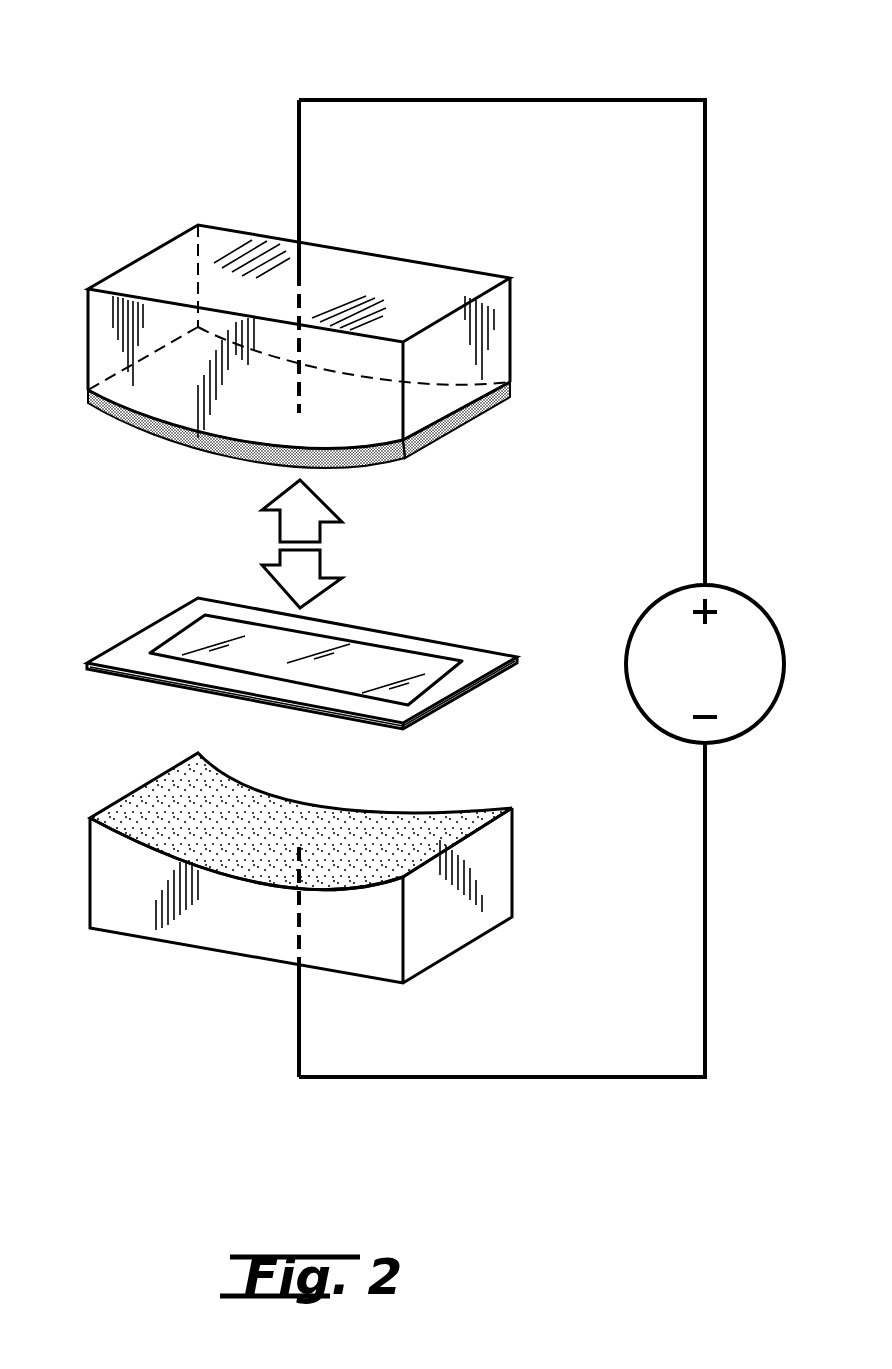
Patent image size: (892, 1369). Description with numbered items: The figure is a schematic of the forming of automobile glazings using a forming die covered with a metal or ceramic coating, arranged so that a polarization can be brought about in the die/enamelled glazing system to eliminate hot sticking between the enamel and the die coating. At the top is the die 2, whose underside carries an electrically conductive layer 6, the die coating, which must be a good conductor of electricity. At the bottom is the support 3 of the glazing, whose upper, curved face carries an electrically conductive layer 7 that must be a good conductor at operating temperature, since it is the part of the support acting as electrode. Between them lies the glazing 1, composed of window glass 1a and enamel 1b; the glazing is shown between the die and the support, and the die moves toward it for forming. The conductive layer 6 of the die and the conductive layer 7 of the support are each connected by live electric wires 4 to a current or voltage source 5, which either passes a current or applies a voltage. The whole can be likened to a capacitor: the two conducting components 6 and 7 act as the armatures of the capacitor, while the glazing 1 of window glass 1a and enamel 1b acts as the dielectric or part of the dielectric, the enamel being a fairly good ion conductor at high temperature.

The glazing 1 is at (293, 619).
The window glass 1a is at (378, 662).
The enamel 1b is at (490, 663).
The die 2 is at (167, 268).
The support 3 is at (127, 908).
The live electric wires 4 is at (515, 100).
The current or voltage source 5 is at (668, 590).
The electrically conductive layer of the die 6 is at (180, 445).
The electrically conductive layer of the support 7 is at (418, 830).